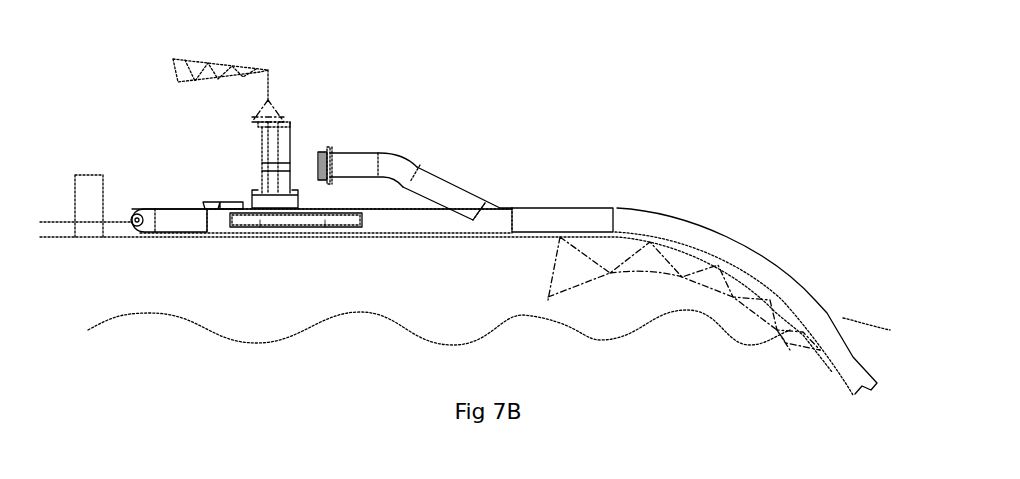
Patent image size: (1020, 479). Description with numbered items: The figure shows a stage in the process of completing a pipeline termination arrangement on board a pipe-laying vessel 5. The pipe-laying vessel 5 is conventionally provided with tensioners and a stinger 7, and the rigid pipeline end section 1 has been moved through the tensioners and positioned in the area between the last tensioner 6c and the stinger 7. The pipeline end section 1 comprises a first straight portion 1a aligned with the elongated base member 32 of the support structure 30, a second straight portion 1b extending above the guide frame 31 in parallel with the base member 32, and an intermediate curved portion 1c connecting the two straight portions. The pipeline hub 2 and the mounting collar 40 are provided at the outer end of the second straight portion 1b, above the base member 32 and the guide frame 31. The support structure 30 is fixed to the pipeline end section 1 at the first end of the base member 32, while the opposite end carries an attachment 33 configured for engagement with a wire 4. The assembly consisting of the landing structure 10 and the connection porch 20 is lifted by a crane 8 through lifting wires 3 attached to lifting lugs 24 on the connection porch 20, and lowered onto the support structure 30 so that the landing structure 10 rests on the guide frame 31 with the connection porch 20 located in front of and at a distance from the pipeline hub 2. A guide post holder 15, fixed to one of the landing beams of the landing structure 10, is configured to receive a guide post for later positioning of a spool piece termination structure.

The pipeline end section 1 is at (641, 156).
The first straight portion 1a is at (558, 218).
The second straight portion 1b is at (400, 155).
The intermediate curved portion 1c is at (453, 186).
The pipeline hub 2 is at (323, 153).
The mounting collar 40 is at (331, 153).
The lifting wires 3 is at (271, 82).
The crane 8 is at (231, 47).
The lifting lugs 24 is at (266, 111).
The connection porch 20 is at (270, 147).
The support structure 30 is at (186, 192).
The landing structure 10 is at (260, 220).
The guide frame 31 is at (325, 223).
The guide post holder 15 is at (213, 222).
The elongated base member 32 is at (180, 227).
The attachment 33 is at (138, 227).
The wire 4 is at (118, 220).
The tensioner 6c is at (91, 178).
The pipe-laying vessel 5 is at (532, 298).
The stinger 7 is at (653, 283).